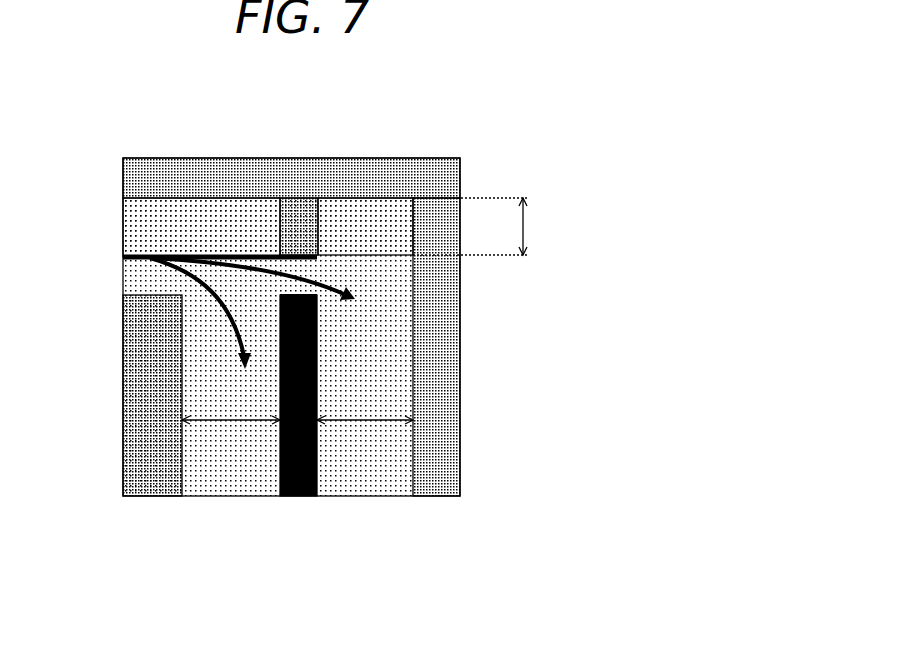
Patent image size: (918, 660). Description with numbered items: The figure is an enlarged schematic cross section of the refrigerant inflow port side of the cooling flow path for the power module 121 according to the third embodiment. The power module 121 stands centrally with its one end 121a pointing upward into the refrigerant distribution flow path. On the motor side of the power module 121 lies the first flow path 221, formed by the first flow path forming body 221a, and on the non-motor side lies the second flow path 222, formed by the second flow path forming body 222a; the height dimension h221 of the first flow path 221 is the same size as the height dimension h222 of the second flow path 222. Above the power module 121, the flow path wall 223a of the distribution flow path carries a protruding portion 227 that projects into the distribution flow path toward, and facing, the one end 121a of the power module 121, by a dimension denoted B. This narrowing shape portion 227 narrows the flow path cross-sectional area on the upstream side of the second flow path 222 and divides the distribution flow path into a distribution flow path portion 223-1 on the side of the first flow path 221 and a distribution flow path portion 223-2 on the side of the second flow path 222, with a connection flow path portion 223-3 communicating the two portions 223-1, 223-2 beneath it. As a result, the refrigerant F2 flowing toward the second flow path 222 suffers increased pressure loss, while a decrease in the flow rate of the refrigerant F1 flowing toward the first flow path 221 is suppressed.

The power module 121 is at (302, 498).
The one end of the power module 121a is at (292, 293).
The first flow path 221 is at (227, 485).
The first flow path forming body 221a is at (133, 447).
The second flow path 222 is at (370, 485).
The second flow path forming body 222a is at (450, 447).
The distribution flow path portion 223-1 is at (183, 218).
The distribution flow path portion 223-2 is at (388, 217).
The connection flow path portion 223-3 is at (295, 280).
The flow path wall of the distribution flow path 223a is at (272, 172).
The protruding portion 227 is at (308, 228).
The refrigerant flowing to the first flow path F1 is at (200, 313).
The refrigerant flowing to the second flow path F2 is at (266, 279).
The height dimension of the first flow path h221 is at (231, 410).
The height dimension of the second flow path h222 is at (365, 410).
The dimension of the narrowing shape portion B is at (480, 226).